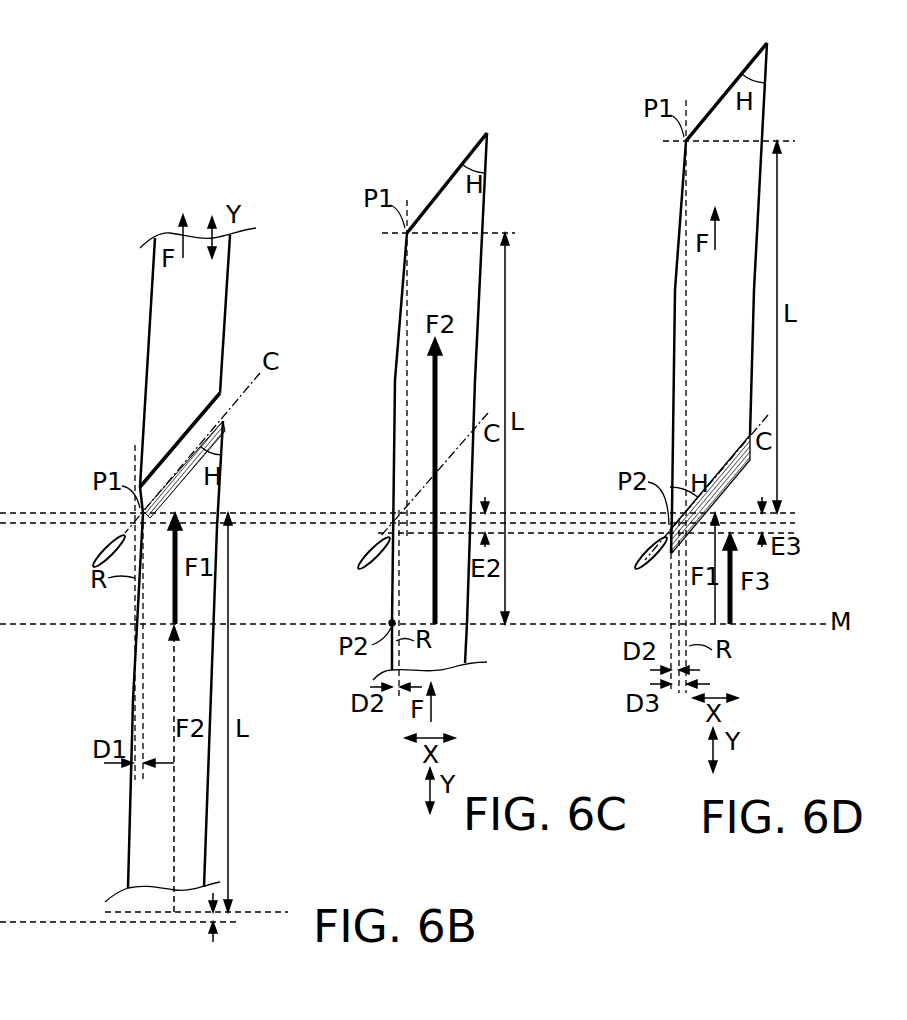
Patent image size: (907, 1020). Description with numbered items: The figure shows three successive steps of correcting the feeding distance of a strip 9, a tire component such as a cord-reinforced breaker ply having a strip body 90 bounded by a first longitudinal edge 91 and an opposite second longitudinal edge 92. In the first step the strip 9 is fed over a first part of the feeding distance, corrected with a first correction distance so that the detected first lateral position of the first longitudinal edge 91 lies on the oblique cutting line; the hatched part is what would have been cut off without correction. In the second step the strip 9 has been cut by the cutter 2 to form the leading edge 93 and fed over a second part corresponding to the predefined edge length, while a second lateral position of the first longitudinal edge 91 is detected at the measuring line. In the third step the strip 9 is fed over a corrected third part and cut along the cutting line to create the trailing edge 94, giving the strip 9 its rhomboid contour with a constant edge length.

In FIG. 6B, the cutter 2 is at (100, 552).
In FIG. 6C, the cutter 2 is at (362, 558).
In FIG. 6D, the cutter 2 is at (641, 558).
In FIG. 6B, the strip 9 is at (130, 837).
In FIG. 6C, the strip 9 is at (405, 595).
In FIG. 6D, the strip 9 is at (740, 365).
In FIG. 6B, the strip body 90 is at (162, 815).
In FIG. 6C, the strip body 90 is at (462, 302).
In FIG. 6D, the strip body 90 is at (737, 323).
In FIG. 6B, the first longitudinal edge 91 is at (132, 718).
In FIG. 6C, the first longitudinal edge 91 is at (393, 415).
In FIG. 6D, the first longitudinal edge 91 is at (673, 352).
In FIG. 6C, the second longitudinal edge 92 is at (468, 636).
In FIG. 6B, the leading edge 93 is at (198, 452).
In FIG. 6C, the leading edge 93 is at (448, 181).
In FIG. 6D, the leading edge 93 is at (714, 106).
In FIG. 6D, the trailing edge 94 is at (748, 462).